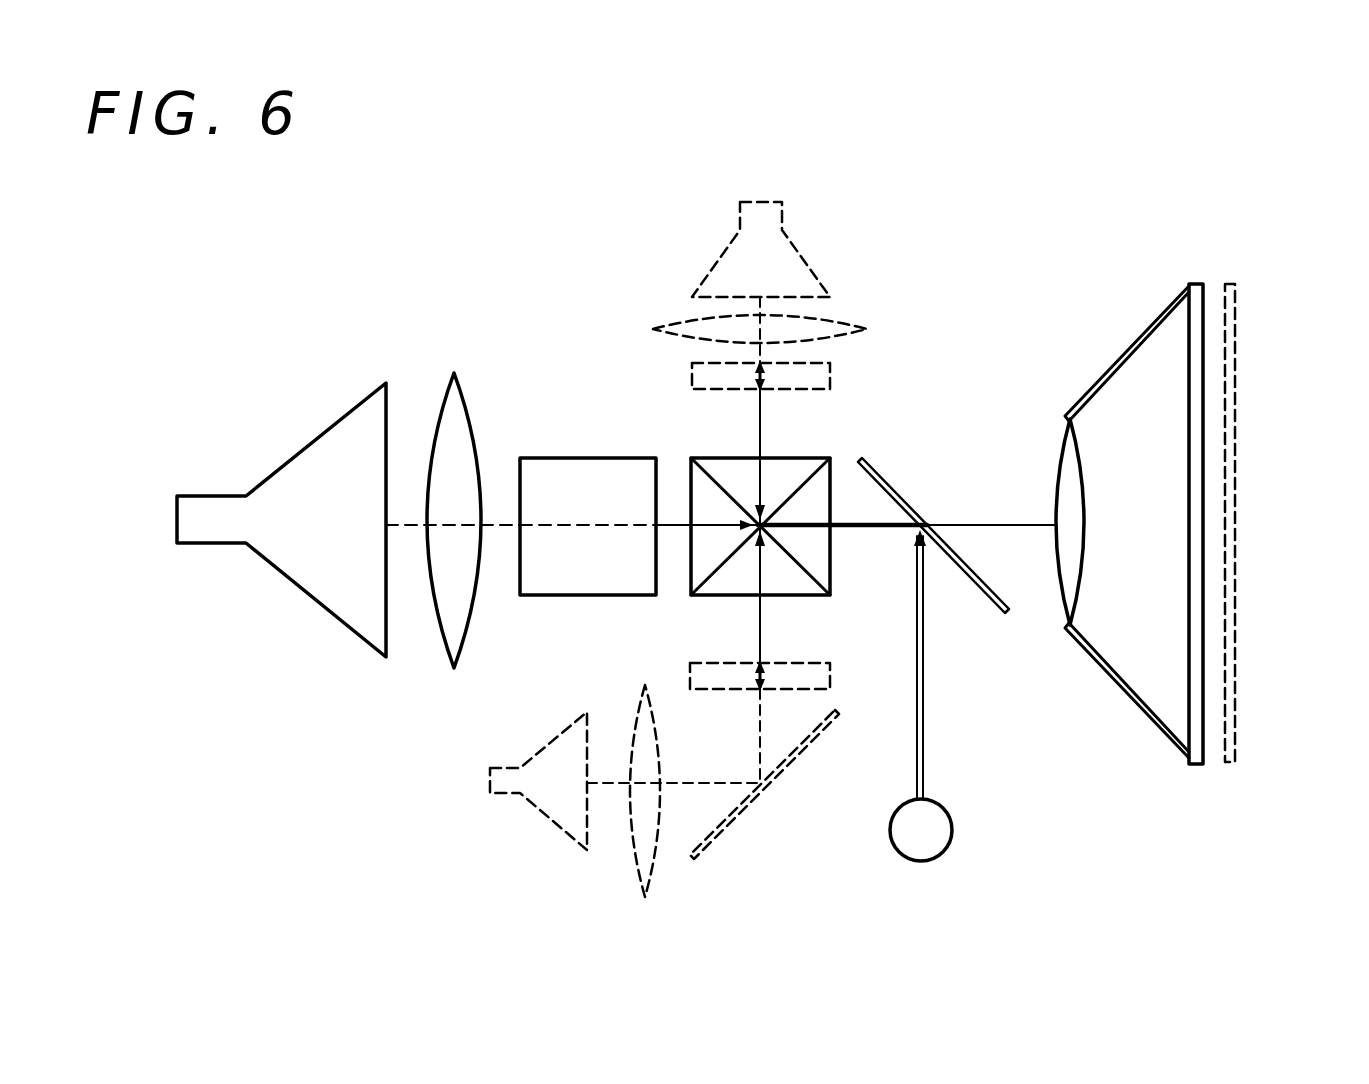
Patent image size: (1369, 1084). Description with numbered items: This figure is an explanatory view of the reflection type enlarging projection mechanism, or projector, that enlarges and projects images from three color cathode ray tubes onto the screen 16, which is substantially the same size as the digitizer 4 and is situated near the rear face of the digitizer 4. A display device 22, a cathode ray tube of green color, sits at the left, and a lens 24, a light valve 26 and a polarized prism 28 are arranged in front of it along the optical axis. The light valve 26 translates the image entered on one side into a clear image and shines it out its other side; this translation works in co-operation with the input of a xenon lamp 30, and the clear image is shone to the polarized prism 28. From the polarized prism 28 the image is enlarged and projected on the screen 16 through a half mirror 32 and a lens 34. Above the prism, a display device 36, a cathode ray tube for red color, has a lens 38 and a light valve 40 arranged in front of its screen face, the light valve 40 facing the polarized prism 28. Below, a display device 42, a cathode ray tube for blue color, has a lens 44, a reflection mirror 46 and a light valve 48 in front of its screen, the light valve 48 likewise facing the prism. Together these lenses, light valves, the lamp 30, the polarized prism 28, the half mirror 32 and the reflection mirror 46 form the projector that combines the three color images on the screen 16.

The digitizer 4 is at (1233, 699).
The screen 16 is at (1197, 578).
The display device 22 is at (345, 425).
The lens 24 is at (447, 400).
The light valve 26 is at (562, 468).
The polarized prism 28 is at (713, 463).
The xenon lamp 30 is at (942, 826).
The half mirror 32 is at (880, 480).
The lens 34 is at (1073, 492).
The display device 36 is at (808, 273).
The lens 38 is at (838, 326).
The light valve 40 is at (822, 379).
The display device 42 is at (533, 763).
The lens 44 is at (638, 723).
The reflection mirror 46 is at (796, 755).
The light valve 48 is at (805, 672).